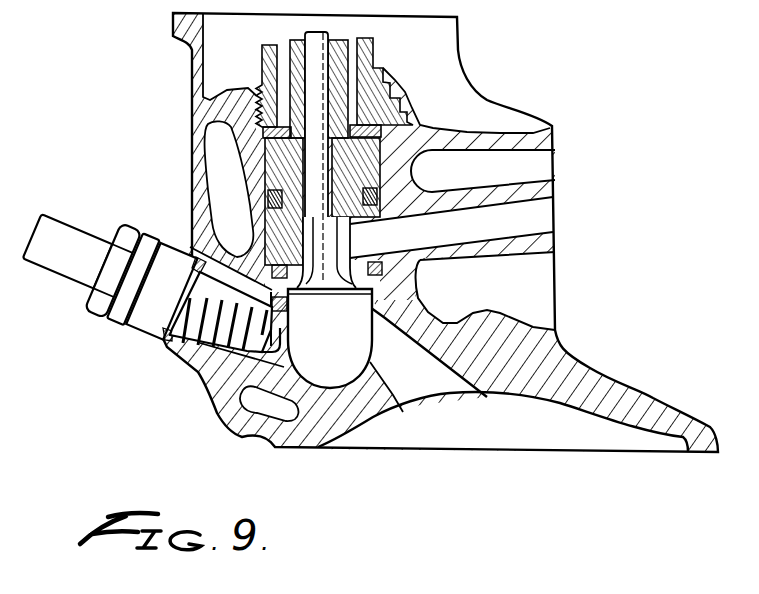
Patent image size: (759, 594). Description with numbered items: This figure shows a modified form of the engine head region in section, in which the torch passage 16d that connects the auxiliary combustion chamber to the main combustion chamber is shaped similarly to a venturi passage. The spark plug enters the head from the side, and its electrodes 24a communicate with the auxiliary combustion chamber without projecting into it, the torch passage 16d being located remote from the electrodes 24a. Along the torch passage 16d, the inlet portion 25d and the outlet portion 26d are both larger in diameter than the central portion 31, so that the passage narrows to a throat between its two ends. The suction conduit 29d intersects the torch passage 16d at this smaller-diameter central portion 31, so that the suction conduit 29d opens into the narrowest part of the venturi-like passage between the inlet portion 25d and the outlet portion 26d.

The torch passage 16d is at (423, 345).
The spark plug electrodes 24a is at (202, 373).
The inlet portion 25d is at (383, 334).
The outlet portion 26d is at (470, 390).
The suction conduit 29d is at (377, 365).
The central portion 31 is at (410, 368).